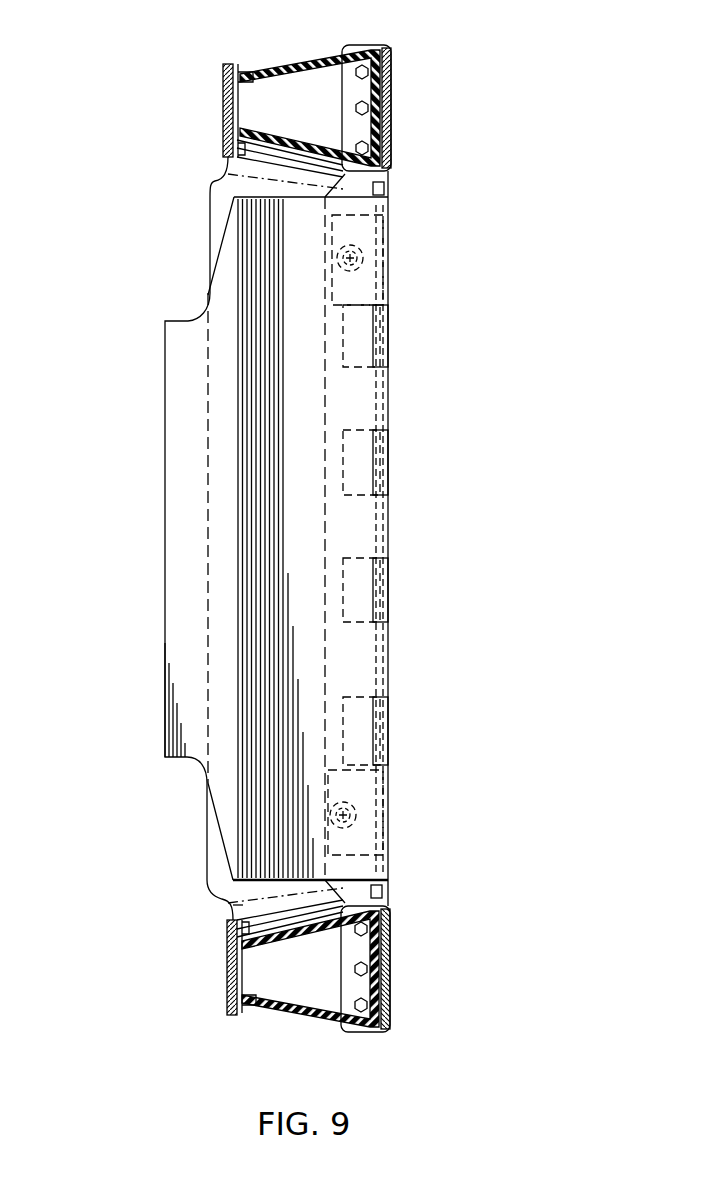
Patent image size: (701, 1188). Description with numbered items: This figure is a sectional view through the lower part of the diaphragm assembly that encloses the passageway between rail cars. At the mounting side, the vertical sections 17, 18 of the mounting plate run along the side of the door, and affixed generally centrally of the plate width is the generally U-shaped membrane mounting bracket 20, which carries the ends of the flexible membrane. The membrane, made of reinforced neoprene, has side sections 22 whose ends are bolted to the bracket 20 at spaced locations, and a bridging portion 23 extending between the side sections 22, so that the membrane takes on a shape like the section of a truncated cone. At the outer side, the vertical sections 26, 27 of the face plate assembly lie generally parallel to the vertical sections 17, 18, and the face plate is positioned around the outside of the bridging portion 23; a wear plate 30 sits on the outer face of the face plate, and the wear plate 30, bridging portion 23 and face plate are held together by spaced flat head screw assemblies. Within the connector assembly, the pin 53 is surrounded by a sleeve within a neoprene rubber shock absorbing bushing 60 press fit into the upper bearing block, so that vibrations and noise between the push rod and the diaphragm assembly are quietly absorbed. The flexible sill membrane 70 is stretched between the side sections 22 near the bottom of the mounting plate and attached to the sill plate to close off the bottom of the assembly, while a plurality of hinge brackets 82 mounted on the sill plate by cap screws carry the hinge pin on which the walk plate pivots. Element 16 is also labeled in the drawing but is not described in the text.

The plate 16 is at (243, 70).
The vertical section 17 is at (228, 1016).
The vertical section 18 is at (228, 64).
The membrane mounting bracket 20 is at (245, 84).
The side section 22 is at (313, 146).
The bridging portion 23 is at (392, 137).
The vertical section 26 is at (390, 172).
The vertical section 27 is at (392, 905).
The wear plate 30 is at (393, 93).
The pin 53 is at (364, 257).
The shock absorbing bushing 60 is at (338, 278).
The sill membrane 70 is at (206, 213).
The hinge bracket 82 is at (365, 338).